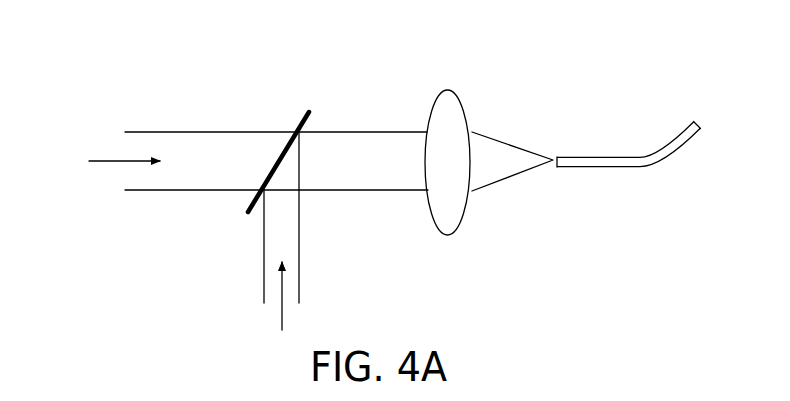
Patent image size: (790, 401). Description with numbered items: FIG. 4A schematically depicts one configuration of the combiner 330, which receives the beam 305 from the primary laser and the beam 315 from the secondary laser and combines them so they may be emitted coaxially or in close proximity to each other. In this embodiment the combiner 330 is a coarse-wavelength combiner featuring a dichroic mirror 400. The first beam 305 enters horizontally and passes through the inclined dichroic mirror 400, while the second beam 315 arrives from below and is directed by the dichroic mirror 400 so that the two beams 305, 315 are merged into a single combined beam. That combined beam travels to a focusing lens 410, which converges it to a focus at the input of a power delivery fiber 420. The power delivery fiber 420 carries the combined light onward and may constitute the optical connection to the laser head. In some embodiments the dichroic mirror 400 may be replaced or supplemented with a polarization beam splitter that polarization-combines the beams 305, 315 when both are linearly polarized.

The combiner 330 is at (128, 65).
The beam 305 is at (200, 132).
The dichroic mirror 400 is at (297, 123).
The beam 315 is at (299, 250).
The focusing lens 410 is at (448, 90).
The power delivery fiber 420 is at (615, 167).